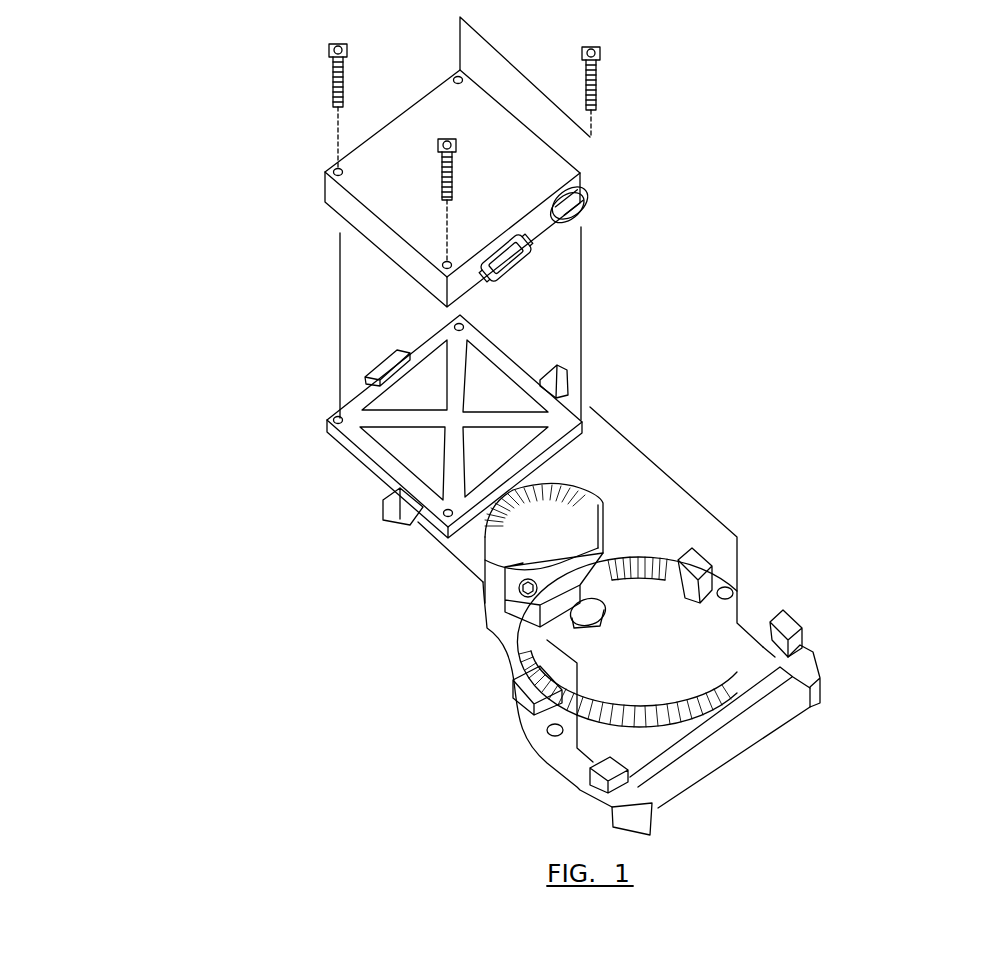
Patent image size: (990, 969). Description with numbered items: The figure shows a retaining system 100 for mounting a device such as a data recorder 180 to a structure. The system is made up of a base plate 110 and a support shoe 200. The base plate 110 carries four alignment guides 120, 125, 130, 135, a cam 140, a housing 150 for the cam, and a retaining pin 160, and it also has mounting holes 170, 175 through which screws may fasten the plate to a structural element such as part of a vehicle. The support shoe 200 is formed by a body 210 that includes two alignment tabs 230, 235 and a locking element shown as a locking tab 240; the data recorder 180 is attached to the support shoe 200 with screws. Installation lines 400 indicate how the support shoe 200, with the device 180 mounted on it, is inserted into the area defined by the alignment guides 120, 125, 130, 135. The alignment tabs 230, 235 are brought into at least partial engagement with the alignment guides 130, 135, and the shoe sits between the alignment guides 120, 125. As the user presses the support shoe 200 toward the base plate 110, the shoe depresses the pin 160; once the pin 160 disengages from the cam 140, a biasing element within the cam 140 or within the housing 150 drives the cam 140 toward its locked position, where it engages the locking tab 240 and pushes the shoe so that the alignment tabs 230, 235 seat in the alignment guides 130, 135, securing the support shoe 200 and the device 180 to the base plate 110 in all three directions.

The retaining system 100 is at (865, 267).
The base plate 110 is at (633, 602).
The alignment guide 120 is at (533, 690).
The alignment guide 125 is at (695, 560).
The alignment guide 130 is at (593, 773).
The alignment guide 135 is at (805, 620).
The cam 140 is at (505, 612).
The housing 150 is at (575, 487).
The retaining pin 160 is at (578, 622).
The mounting hole 170 is at (547, 733).
The mounting hole 175 is at (733, 587).
The data recorder 180 is at (368, 177).
The support shoe 200 is at (406, 469).
The body 210 is at (390, 468).
The alignment tab 230 is at (398, 510).
The alignment tab 235 is at (567, 375).
The locking tab 240 is at (373, 372).
The installation lines 400 is at (707, 502).